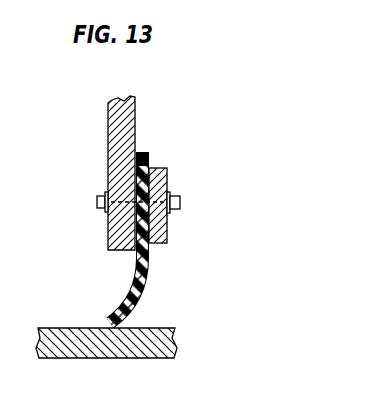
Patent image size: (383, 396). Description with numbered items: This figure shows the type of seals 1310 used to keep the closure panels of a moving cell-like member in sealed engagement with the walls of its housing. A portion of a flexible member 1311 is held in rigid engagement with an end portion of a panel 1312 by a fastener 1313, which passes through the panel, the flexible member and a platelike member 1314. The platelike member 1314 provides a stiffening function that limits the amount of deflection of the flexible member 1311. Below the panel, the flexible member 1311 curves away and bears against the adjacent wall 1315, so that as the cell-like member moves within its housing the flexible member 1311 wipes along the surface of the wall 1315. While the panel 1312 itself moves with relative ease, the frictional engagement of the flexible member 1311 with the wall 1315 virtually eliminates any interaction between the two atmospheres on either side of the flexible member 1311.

The seals 1310 is at (247, 208).
The flexible member 1311 is at (128, 293).
The panel 1312 is at (108, 125).
The fastener 1313 is at (96, 202).
The platelike member 1314 is at (167, 170).
The wall 1315 is at (176, 343).